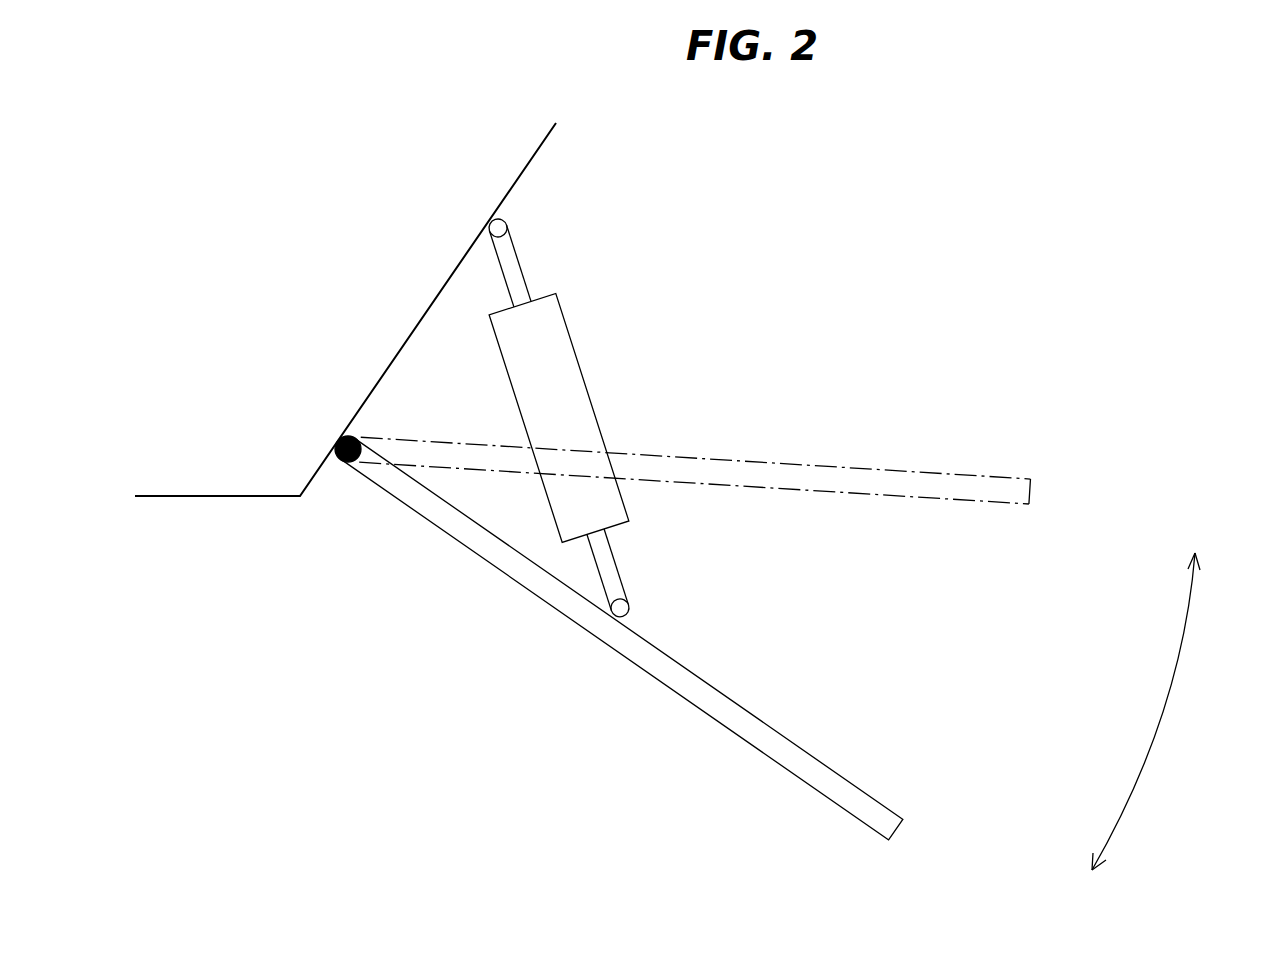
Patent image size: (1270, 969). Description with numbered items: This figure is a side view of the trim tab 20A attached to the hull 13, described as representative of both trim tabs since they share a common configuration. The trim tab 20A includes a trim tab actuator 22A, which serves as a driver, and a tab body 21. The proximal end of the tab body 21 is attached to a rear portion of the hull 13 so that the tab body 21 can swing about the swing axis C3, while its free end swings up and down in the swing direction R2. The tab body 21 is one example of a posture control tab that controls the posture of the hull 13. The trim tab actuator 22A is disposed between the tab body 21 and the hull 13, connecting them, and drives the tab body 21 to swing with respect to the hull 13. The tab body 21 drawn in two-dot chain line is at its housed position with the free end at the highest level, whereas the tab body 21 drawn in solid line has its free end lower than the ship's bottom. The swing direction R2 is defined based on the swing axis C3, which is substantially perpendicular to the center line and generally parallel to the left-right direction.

The hull 13 is at (525, 160).
The trim tab 20A is at (666, 524).
The tab body 21 is at (972, 473).
The trim tab actuator 22A is at (585, 358).
The swing axis C3 is at (341, 463).
The swing direction R2 is at (1147, 711).